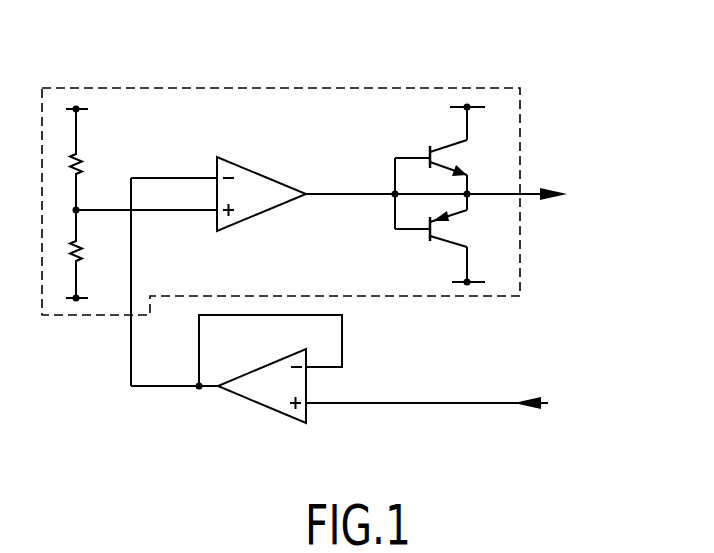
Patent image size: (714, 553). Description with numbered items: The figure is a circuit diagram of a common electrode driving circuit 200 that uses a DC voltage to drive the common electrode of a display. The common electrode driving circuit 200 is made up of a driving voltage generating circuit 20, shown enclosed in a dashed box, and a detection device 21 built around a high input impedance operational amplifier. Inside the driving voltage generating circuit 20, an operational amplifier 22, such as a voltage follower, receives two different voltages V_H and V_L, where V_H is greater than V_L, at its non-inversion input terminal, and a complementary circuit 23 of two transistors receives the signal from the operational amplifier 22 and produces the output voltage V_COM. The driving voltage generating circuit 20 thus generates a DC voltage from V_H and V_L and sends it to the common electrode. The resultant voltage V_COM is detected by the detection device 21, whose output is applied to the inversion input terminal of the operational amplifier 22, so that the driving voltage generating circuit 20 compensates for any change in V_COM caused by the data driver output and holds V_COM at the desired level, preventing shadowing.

The common electrode driving circuit 200 is at (348, 67).
The driving voltage generating circuit 20 is at (521, 116).
The detection device 21 is at (264, 408).
The operational amplifier 22 is at (256, 166).
The complementary circuit 23 is at (398, 137).